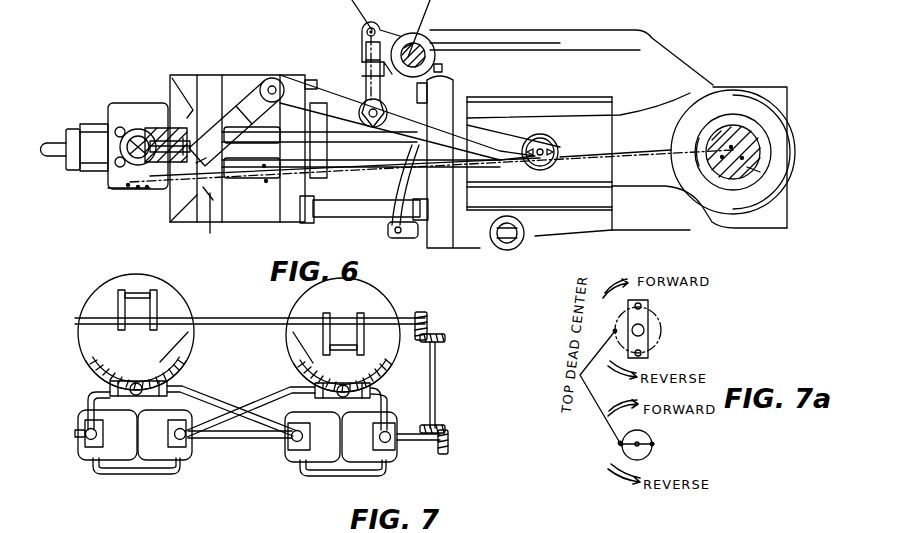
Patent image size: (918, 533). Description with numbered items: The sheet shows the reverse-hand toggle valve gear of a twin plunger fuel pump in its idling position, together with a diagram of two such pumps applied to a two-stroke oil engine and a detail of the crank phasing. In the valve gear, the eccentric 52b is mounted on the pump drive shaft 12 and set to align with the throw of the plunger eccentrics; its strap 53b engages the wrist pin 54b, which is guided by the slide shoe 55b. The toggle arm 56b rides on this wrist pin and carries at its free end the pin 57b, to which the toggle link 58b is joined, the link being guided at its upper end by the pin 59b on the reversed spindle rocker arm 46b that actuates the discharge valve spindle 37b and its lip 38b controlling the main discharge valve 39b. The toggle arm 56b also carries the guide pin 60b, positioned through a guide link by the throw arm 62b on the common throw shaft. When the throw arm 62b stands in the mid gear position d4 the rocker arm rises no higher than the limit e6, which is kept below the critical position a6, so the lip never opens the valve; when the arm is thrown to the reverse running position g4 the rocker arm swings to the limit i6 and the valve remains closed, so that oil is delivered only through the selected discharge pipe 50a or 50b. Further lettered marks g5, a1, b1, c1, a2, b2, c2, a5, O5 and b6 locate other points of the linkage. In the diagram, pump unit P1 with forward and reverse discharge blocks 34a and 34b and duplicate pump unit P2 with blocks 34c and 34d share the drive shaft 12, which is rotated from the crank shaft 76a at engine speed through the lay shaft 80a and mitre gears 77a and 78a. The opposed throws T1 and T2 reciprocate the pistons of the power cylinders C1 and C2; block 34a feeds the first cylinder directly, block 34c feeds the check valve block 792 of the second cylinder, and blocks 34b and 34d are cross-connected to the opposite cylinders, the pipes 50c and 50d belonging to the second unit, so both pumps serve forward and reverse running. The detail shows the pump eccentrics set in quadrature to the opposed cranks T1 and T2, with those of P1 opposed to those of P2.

In FIG. 6, the discharge pipe 50b is at (50, 144).
In FIG. 7, the discharge pipe 50b is at (262, 403).
In FIG. 6, the discharge valve spindle 37b is at (106, 146).
In FIG. 6, the lip 38b is at (138, 140).
In FIG. 6, the main discharge valve 39b is at (192, 110).
In FIG. 6, the toggle link 58b is at (228, 124).
In FIG. 6, the pivot hole g5 is at (269, 86).
In FIG. 6, the pin 57b is at (276, 80).
In FIG. 6, the mid gear position d4 is at (366, 36).
In FIG. 6, the throw arm 62b is at (388, 33).
In FIG. 6, the reverse running position g4 is at (364, 78).
In FIG. 6, the toggle arm 56b is at (493, 138).
In FIG. 6, the guide pin 60b is at (372, 117).
In FIG. 6, the pin 59b is at (314, 199).
In FIG. 6, the wrist pin 54b is at (541, 148).
In FIG. 6, the pulley center a2 is at (540, 160).
In FIG. 6, the pulley mark b2 is at (527, 160).
In FIG. 6, the pulley mark c2 is at (557, 163).
In FIG. 6, the slide shoe 55b is at (589, 118).
In FIG. 6, the strap 53b is at (643, 140).
In FIG. 6, the eccentric 52b is at (736, 113).
In FIG. 6, the center point a1 is at (732, 147).
In FIG. 6, the point b1 is at (722, 156).
In FIG. 6, the point c1 is at (748, 168).
In FIG. 6, the pump drive shaft 12 is at (743, 158).
In FIG. 7, the pump drive shaft 12 is at (236, 444).
In FIG. 6, the point a5 is at (264, 167).
In FIG. 6, the point O5 is at (266, 182).
In FIG. 6, the limit position i6 is at (199, 162).
In FIG. 6, the spindle rocker arm 46b is at (130, 187).
In FIG. 6, the point b6 is at (128, 185).
In FIG. 6, the critical position a6 is at (138, 187).
In FIG. 6, the limit position e6 is at (147, 187).
In FIG. 7, the power cylinder C1 is at (188, 332).
In FIG. 7, the power cylinder C2 is at (293, 332).
In FIG. 7, the crank shaft 76a is at (218, 321).
In FIG. 7, the crank throw T1 is at (140, 295).
In FIG. 7a, the crank throw T1 is at (641, 306).
In FIG. 7, the crank throw T2 is at (336, 342).
In FIG. 7a, the crank throw T2 is at (641, 353).
In FIG. 7, the mitre gears 77a is at (433, 338).
In FIG. 7, the lay shaft 80a is at (436, 390).
In FIG. 7, the mitre gears 78a is at (443, 452).
In FIG. 7, the check valve block 792 is at (370, 388).
In FIG. 7, the fuel pump unit P1 is at (155, 448).
In FIG. 7a, the fuel pump unit P1 is at (620, 445).
In FIG. 7, the fuel pump unit P2 is at (360, 453).
In FIG. 7a, the fuel pump unit P2 is at (653, 443).
In FIG. 7, the forward discharge block 34a is at (83, 441).
In FIG. 7, the reverse discharge block 34b is at (185, 447).
In FIG. 7, the forward discharge block 34c is at (389, 450).
In FIG. 7, the reverse discharge block 34d is at (294, 445).
In FIG. 7, the discharge pipe 50a is at (86, 404).
In FIG. 7, the pipe 50c is at (390, 411).
In FIG. 7, the pipe 50d is at (201, 409).